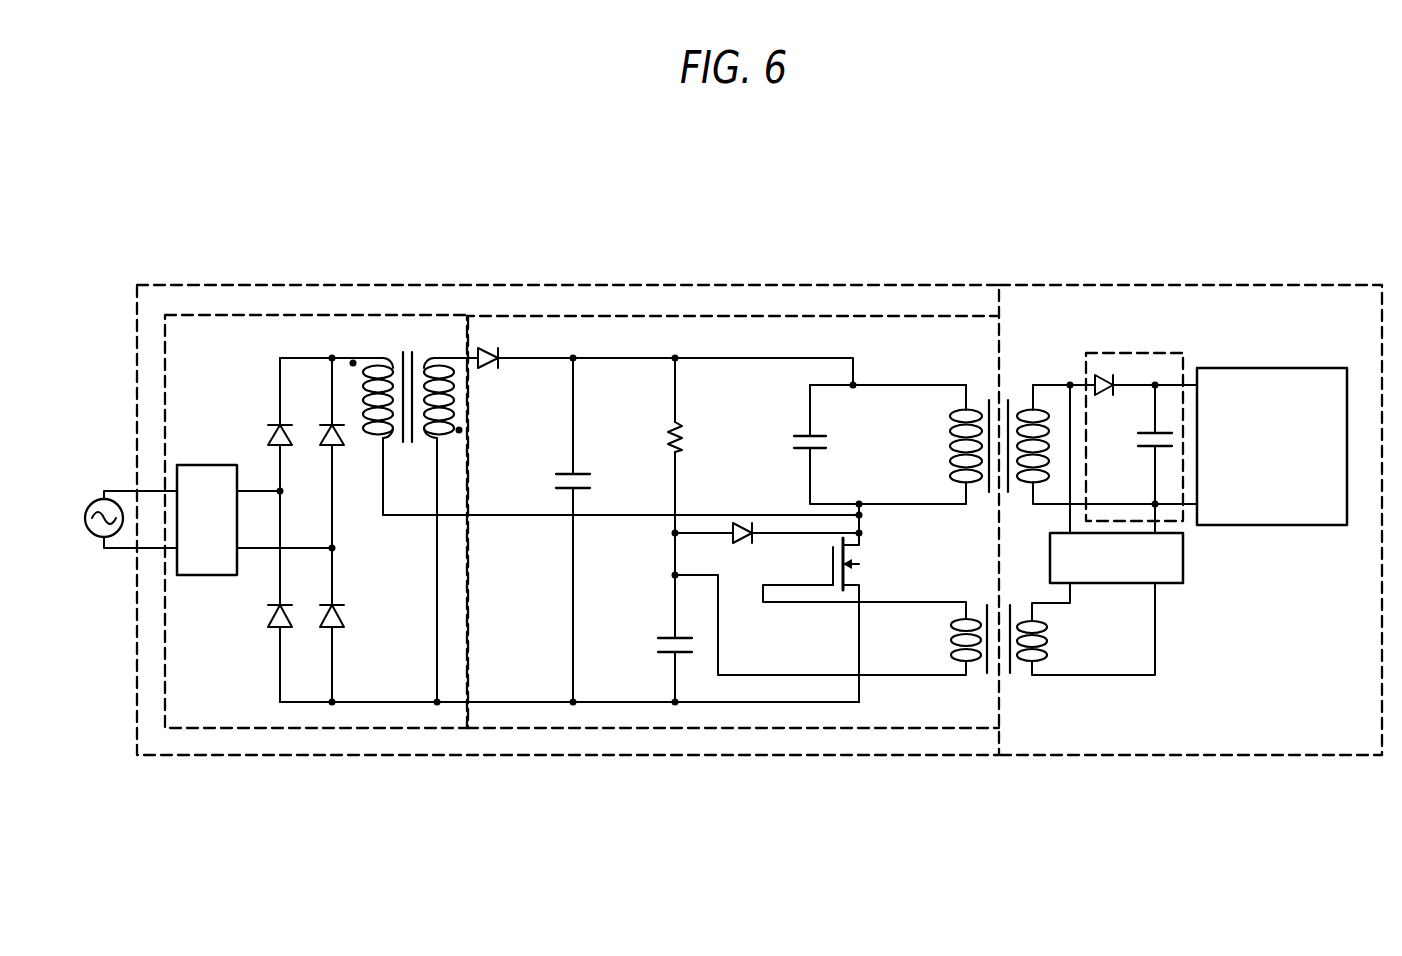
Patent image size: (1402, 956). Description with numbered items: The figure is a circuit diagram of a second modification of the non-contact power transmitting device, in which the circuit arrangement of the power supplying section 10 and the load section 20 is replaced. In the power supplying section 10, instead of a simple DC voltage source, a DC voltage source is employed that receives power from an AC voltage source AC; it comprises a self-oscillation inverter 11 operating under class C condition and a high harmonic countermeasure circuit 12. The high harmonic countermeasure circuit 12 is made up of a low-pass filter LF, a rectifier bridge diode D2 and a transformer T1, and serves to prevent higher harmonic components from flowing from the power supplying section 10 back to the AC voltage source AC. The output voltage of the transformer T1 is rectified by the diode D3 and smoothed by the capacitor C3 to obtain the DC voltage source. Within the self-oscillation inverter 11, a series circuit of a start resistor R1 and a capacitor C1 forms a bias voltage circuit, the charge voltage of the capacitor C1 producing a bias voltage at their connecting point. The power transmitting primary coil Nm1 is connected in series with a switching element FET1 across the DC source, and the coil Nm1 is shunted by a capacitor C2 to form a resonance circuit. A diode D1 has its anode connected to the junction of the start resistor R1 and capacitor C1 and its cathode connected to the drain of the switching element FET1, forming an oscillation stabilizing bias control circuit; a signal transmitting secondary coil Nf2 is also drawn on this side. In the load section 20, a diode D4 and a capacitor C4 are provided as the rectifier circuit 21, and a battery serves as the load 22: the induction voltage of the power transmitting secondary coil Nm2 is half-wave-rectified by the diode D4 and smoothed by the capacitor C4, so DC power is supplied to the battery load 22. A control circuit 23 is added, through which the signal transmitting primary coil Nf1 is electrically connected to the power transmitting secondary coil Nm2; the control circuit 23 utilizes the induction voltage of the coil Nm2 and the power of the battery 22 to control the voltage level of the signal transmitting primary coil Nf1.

The power supplying section 10 is at (921, 285).
The self-oscillation inverter 11 is at (553, 316).
The high harmonic countermeasure circuit 12 is at (428, 315).
The load section 20 is at (1361, 285).
The rectifier circuit 21 is at (1130, 352).
The load 22 is at (1263, 367).
The control circuit 23 is at (1186, 558).
The AC voltage source AC is at (99, 496).
The low-pass filter LF is at (207, 520).
The rectifier bridge diode D2 is at (315, 531).
The transformer T1 is at (406, 447).
The diode D3 is at (491, 368).
The capacitor C3 is at (554, 482).
The start resistor R1 is at (669, 432).
The capacitor C2 is at (792, 444).
The power transmitting primary coil Nm1 is at (949, 450).
The power transmitting secondary coil Nm2 is at (1030, 402).
The diode D4 is at (1116, 396).
The capacitor C4 is at (1134, 455).
The diode D1 is at (744, 545).
The switching element FET1 is at (866, 559).
The capacitor C1 is at (657, 640).
The signal transmitting secondary coil Nf2 is at (940, 638).
The signal transmitting primary coil Nf1 is at (1060, 638).